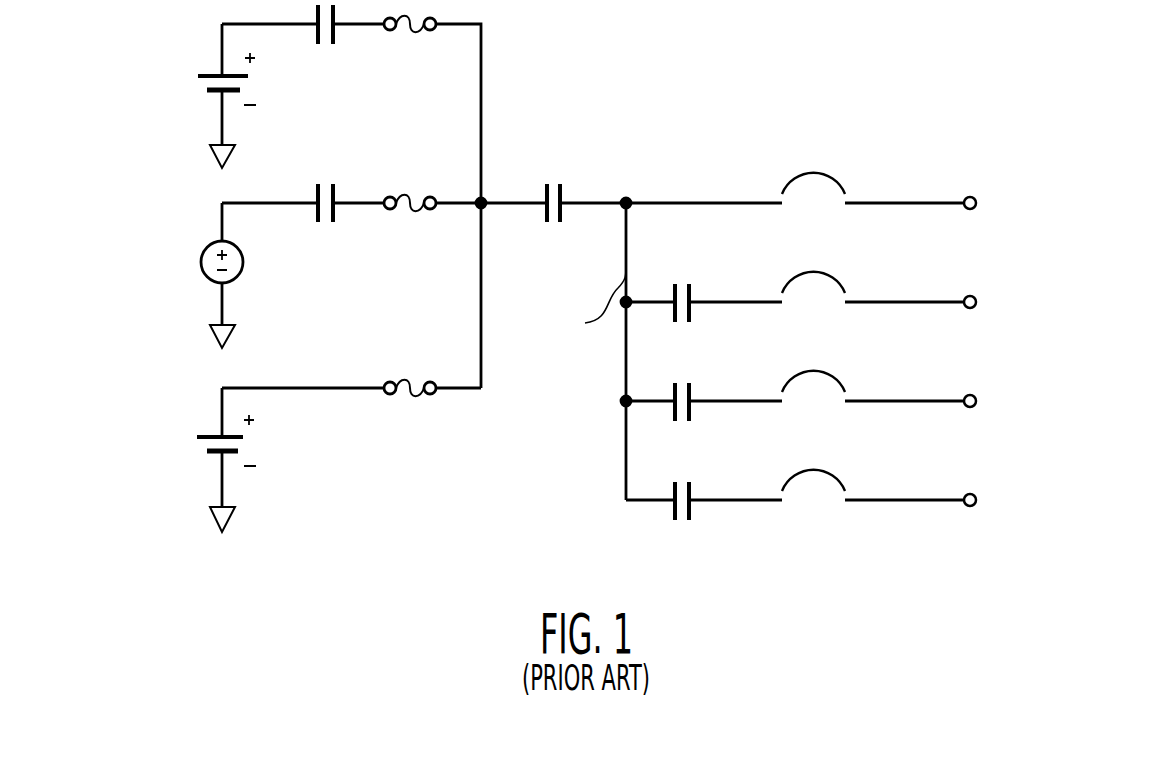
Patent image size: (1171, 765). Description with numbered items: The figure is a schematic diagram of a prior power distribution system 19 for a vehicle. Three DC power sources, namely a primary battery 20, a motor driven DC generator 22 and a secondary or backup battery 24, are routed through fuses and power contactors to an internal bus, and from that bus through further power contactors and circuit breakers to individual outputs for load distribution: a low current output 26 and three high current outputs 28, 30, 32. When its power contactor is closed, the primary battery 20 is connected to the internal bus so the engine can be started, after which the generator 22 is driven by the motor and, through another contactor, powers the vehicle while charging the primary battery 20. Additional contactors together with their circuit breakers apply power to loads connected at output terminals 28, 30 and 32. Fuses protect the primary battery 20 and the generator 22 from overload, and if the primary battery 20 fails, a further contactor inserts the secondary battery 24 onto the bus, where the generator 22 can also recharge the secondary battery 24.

The prior power distribution system 19 is at (820, 56).
The primary battery 20 is at (243, 443).
The motor driven DC generator 22 is at (243, 262).
The secondary battery 24 is at (245, 82).
The low current output 26 is at (966, 197).
The high current output 28 is at (966, 296).
The high current output 30 is at (966, 396).
The high current output 32 is at (966, 495).